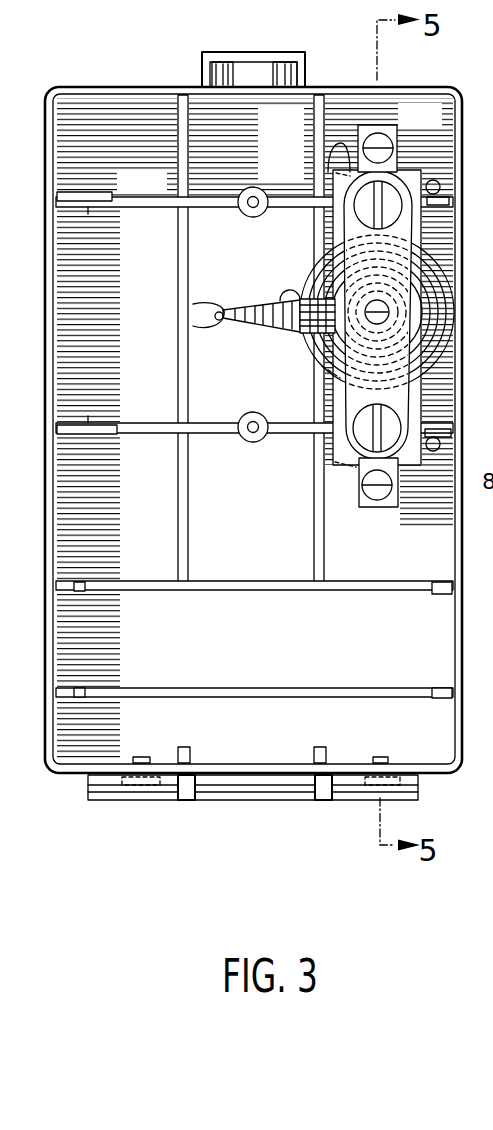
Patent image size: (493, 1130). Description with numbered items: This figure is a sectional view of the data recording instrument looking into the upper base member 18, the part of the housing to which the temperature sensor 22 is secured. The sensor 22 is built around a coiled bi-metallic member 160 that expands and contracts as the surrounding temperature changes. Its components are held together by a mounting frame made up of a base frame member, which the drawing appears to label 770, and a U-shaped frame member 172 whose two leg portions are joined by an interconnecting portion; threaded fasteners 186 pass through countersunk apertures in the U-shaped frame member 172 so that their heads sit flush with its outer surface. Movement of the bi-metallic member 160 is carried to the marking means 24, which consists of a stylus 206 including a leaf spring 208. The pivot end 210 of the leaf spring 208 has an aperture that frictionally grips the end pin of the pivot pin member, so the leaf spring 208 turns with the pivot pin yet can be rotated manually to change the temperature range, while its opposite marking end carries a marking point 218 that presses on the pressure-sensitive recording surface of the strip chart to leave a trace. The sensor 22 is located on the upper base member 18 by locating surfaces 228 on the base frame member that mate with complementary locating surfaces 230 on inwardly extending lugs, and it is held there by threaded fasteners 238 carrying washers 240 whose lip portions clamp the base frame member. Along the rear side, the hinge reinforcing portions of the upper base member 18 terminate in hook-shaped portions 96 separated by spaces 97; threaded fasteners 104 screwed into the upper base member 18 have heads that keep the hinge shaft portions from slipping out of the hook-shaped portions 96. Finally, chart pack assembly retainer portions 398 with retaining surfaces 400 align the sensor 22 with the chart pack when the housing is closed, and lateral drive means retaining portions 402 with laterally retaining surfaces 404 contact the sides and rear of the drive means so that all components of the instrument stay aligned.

The upper base member 18 is at (89, 86).
The sensor 22 is at (415, 166).
The marking means 24 is at (228, 302).
The hook-shaped portion 96 is at (150, 800).
The spaces 97 is at (188, 800).
The threaded fasteners 104 is at (123, 808).
The coiled bi-metallic member 160 is at (303, 343).
The upper bearing knob 770 is at (352, 210).
The U-shaped frame member 172 is at (355, 397).
The threaded fastener 186 is at (364, 213).
The stylus 206 is at (198, 317).
The leaf spring 208 is at (252, 317).
The pivot end 210 is at (320, 370).
The marking point 218 is at (198, 305).
The locating surfaces 228 is at (323, 158).
The locating surfaces 230 is at (320, 172).
The threaded fasteners 238 is at (384, 134).
The washers 240 is at (318, 124).
The chart pack assembly retainer portions 398 is at (94, 206).
The retaining surfaces 400 is at (112, 198).
The lateral drive means retaining portions 402 is at (448, 581).
The laterally retaining surfaces 404 is at (80, 590).